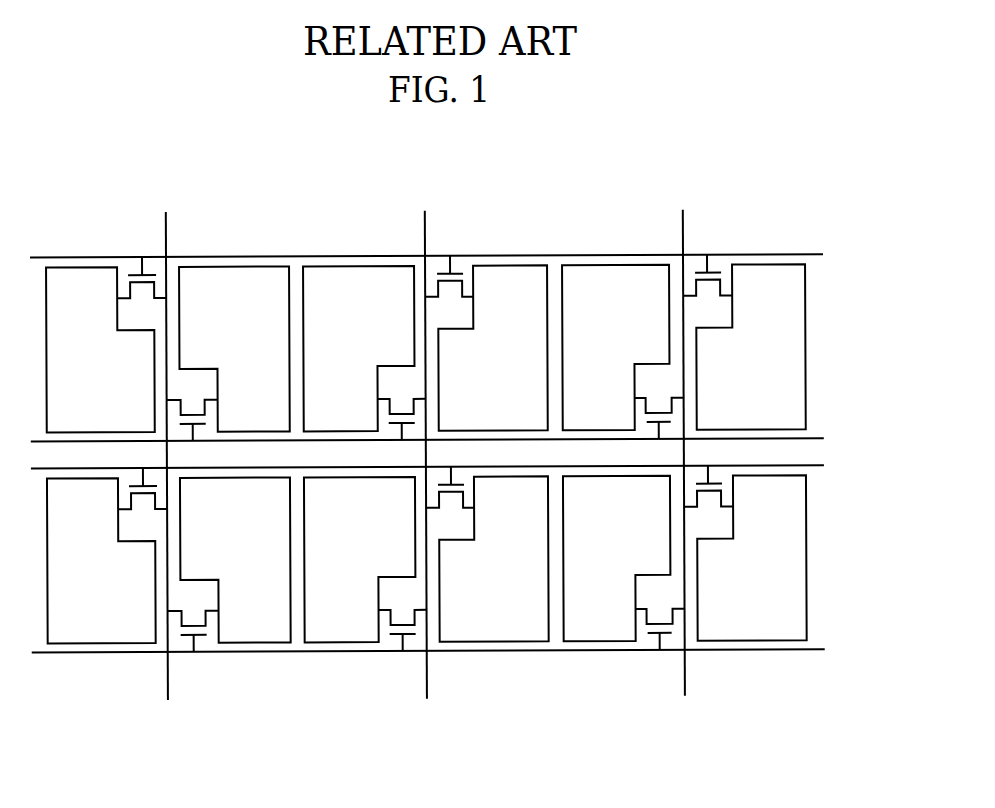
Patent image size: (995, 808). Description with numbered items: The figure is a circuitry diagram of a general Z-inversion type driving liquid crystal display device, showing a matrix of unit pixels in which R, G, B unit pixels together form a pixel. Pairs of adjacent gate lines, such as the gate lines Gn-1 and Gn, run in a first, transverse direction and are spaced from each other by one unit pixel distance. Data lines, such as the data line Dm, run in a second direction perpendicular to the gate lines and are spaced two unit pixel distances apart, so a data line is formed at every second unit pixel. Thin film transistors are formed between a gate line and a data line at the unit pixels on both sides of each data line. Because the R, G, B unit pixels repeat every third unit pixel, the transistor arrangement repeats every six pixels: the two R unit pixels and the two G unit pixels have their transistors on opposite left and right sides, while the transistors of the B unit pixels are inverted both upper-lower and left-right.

The data line Dm is at (174, 442).
The gate line Gn-1 is at (447, 257).
The gate line Gn is at (445, 436).
The R unit pixel R is at (297, 454).
The G unit pixel G is at (425, 454).
The B unit pixel B is at (555, 453).